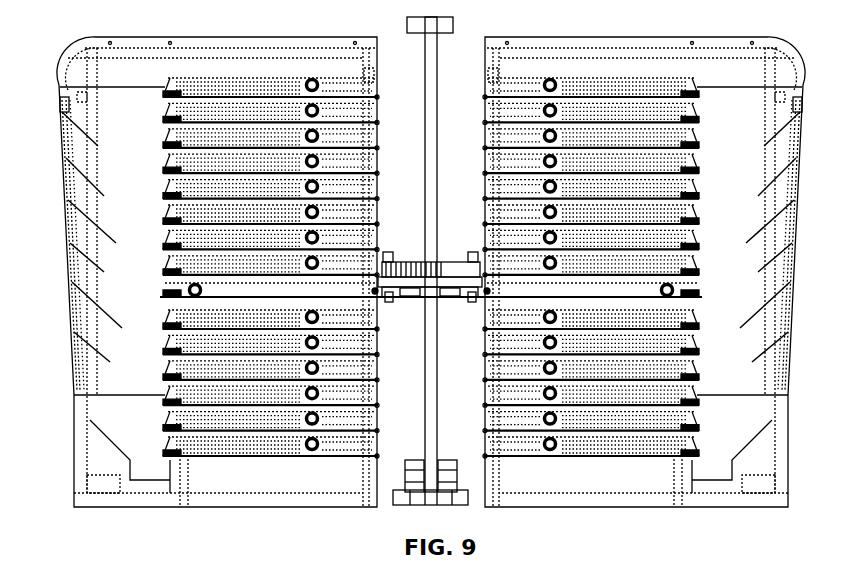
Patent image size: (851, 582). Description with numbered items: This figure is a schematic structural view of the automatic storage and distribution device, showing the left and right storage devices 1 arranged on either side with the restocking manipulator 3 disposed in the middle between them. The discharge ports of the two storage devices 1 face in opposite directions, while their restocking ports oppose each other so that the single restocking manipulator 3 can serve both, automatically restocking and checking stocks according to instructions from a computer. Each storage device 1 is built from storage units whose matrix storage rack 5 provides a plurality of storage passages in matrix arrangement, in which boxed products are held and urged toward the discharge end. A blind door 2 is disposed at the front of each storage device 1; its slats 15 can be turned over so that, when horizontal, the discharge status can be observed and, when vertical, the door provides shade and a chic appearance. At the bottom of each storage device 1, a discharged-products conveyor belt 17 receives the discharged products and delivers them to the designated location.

The storage device 1 is at (347, 163).
The blind door 2 is at (58, 128).
The restocking manipulator 3 is at (415, 299).
The matrix storage rack 5 is at (376, 206).
The slats of the blind door 15 is at (64, 183).
The discharged-products conveyor belt 17 is at (147, 492).